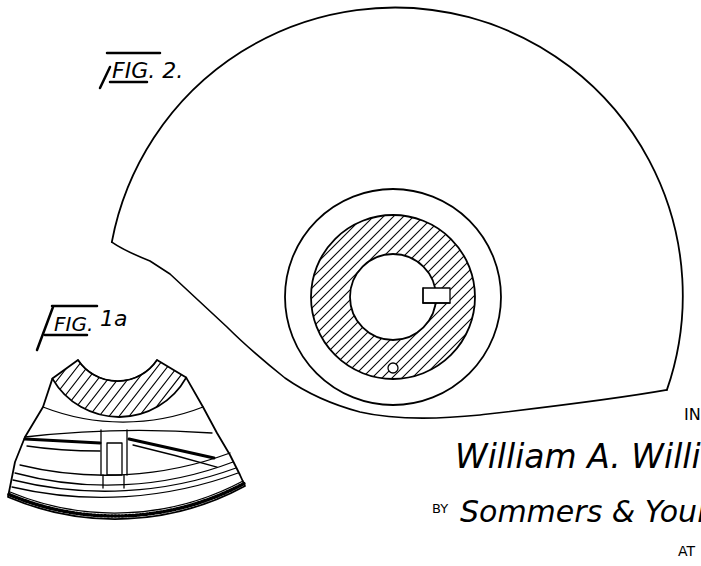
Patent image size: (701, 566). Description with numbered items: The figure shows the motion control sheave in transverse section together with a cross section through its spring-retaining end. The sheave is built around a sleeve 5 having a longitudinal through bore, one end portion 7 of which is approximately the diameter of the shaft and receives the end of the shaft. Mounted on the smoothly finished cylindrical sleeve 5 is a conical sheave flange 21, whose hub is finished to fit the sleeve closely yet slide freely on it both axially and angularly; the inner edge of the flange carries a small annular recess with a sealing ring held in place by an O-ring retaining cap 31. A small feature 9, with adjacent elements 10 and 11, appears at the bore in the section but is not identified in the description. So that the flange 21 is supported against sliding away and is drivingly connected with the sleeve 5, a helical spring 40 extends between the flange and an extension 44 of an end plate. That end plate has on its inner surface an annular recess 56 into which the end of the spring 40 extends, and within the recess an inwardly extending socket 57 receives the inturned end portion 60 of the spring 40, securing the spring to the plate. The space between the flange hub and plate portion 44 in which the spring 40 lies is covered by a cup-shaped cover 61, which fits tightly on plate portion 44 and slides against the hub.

In FIG. 2, the conical sheave flange 21 is at (595, 116).
In FIG. 2, the O-ring retaining cap 31 is at (425, 202).
In FIG. 2, the end portion of bore 7 is at (412, 260).
In FIG. 1a, the end portion of bore 7 is at (137, 378).
In FIG. 2, the sleeve 5 is at (453, 256).
In FIG. 1a, the sleeve 5 is at (63, 373).
In FIG. 2, the key 9 is at (451, 294).
In FIG. 2, the key face 10 is at (428, 297).
In FIG. 2, the key shoulder 11 is at (426, 301).
In FIG. 1a, the extension of end plate 44 is at (205, 413).
In FIG. 1a, the helical spring 40 is at (210, 446).
In FIG. 1a, the annular recess 56 is at (232, 447).
In FIG. 1a, the inwardly extending socket 57 is at (134, 443).
In FIG. 1a, the inturned end portion of spring 60 is at (118, 457).
In FIG. 1a, the cup-shaped cover 61 is at (219, 492).